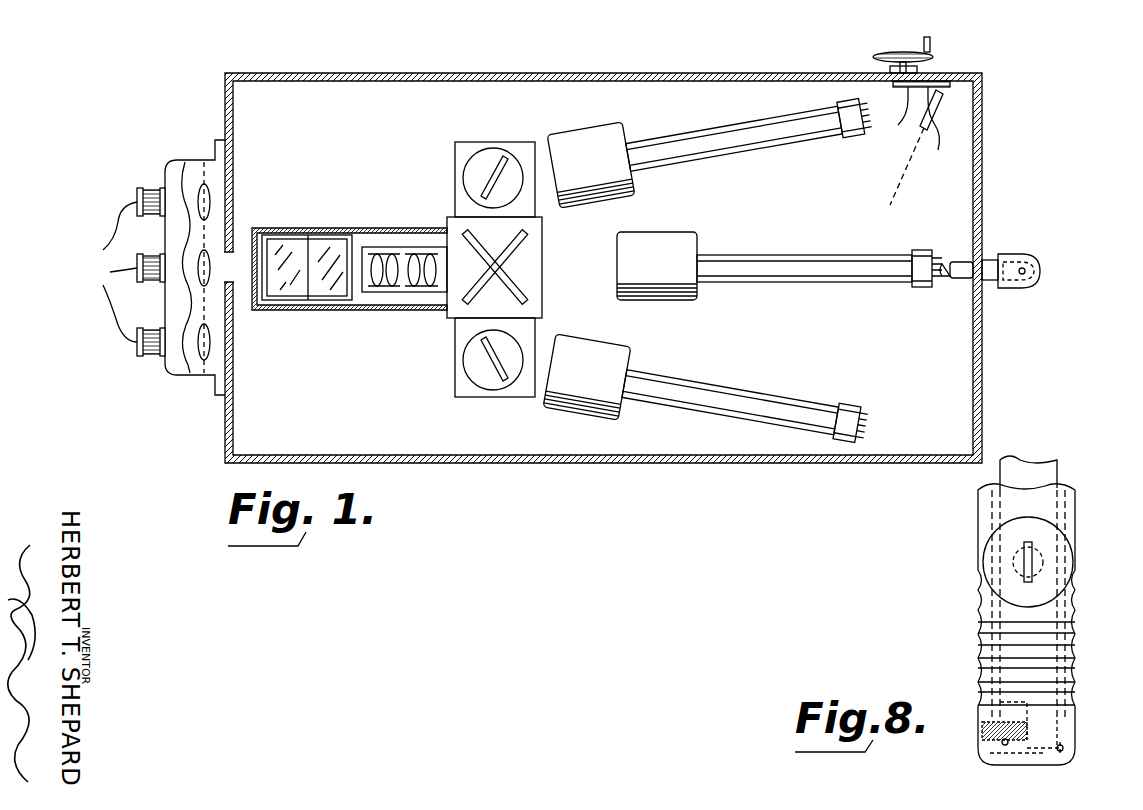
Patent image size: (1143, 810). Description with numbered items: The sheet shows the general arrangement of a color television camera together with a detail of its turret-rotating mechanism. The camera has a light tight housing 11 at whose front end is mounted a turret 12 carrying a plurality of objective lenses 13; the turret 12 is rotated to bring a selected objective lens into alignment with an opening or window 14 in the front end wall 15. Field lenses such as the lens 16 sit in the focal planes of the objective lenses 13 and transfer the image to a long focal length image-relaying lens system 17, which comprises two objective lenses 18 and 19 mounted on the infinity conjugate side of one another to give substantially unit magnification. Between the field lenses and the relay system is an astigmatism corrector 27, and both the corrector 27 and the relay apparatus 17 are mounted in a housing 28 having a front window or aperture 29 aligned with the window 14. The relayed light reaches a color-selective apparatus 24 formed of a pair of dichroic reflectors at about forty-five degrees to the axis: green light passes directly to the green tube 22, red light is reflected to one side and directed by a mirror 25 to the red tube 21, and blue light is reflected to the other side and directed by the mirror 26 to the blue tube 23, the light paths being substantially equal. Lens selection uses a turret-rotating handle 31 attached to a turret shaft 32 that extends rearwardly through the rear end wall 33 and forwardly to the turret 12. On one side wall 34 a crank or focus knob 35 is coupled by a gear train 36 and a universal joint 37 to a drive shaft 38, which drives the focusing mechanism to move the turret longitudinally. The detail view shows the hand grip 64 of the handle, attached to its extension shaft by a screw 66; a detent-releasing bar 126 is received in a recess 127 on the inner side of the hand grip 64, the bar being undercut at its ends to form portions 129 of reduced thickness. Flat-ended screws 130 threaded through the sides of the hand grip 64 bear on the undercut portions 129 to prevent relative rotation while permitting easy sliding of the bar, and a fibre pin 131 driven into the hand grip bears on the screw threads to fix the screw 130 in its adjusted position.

In FIG. 1, the light tight housing 11 is at (700, 466).
In FIG. 1, the turret 12 is at (186, 162).
In FIG. 1, the objective lenses 13 is at (124, 272).
In FIG. 1, the opening or window 14 is at (233, 262).
In FIG. 1, the front end wall 15 is at (225, 424).
In FIG. 1, the field lens 16 is at (228, 300).
In FIG. 1, the image-relaying lens system 17 is at (399, 260).
In FIG. 1, the objective lens 18 is at (384, 288).
In FIG. 1, the objective lens 19 is at (425, 288).
In FIG. 1, the red tube 21 is at (580, 124).
In FIG. 1, the green tube 22 is at (672, 232).
In FIG. 1, the blue tube 23 is at (626, 347).
In FIG. 1, the color-selective apparatus 24 is at (543, 283).
In FIG. 1, the mirror 25 is at (478, 142).
In FIG. 1, the mirror 26 is at (478, 397).
In FIG. 1, the astigmatism corrector 27 is at (297, 245).
In FIG. 1, the housing 28 is at (330, 310).
In FIG. 1, the front window or aperture 29 is at (256, 250).
In FIG. 1, the turret-rotating handle 31 is at (1022, 254).
In FIG. 1, the turret shaft 32 is at (948, 262).
In FIG. 1, the rear end wall 33 is at (982, 152).
In FIG. 1, the side wall 34 is at (768, 73).
In FIG. 1, the focus knob 35 is at (903, 55).
In FIG. 1, the gear train 36 is at (908, 100).
In FIG. 1, the universal joint 37 is at (940, 115).
In FIG. 1, the drive shaft 38 is at (920, 150).
In FIG. 8, the detent-releasing bar 126 is at (1005, 462).
In FIG. 8, the screw 66 is at (1035, 519).
In FIG. 8, the hand grip 64 is at (1078, 612).
In FIG. 8, the flat-ended screw 130 is at (980, 730).
In FIG. 8, the undercut portion 129 is at (1057, 722).
In FIG. 8, the recess 127 is at (1070, 750).
In FIG. 8, the fibre pin 131 is at (985, 753).